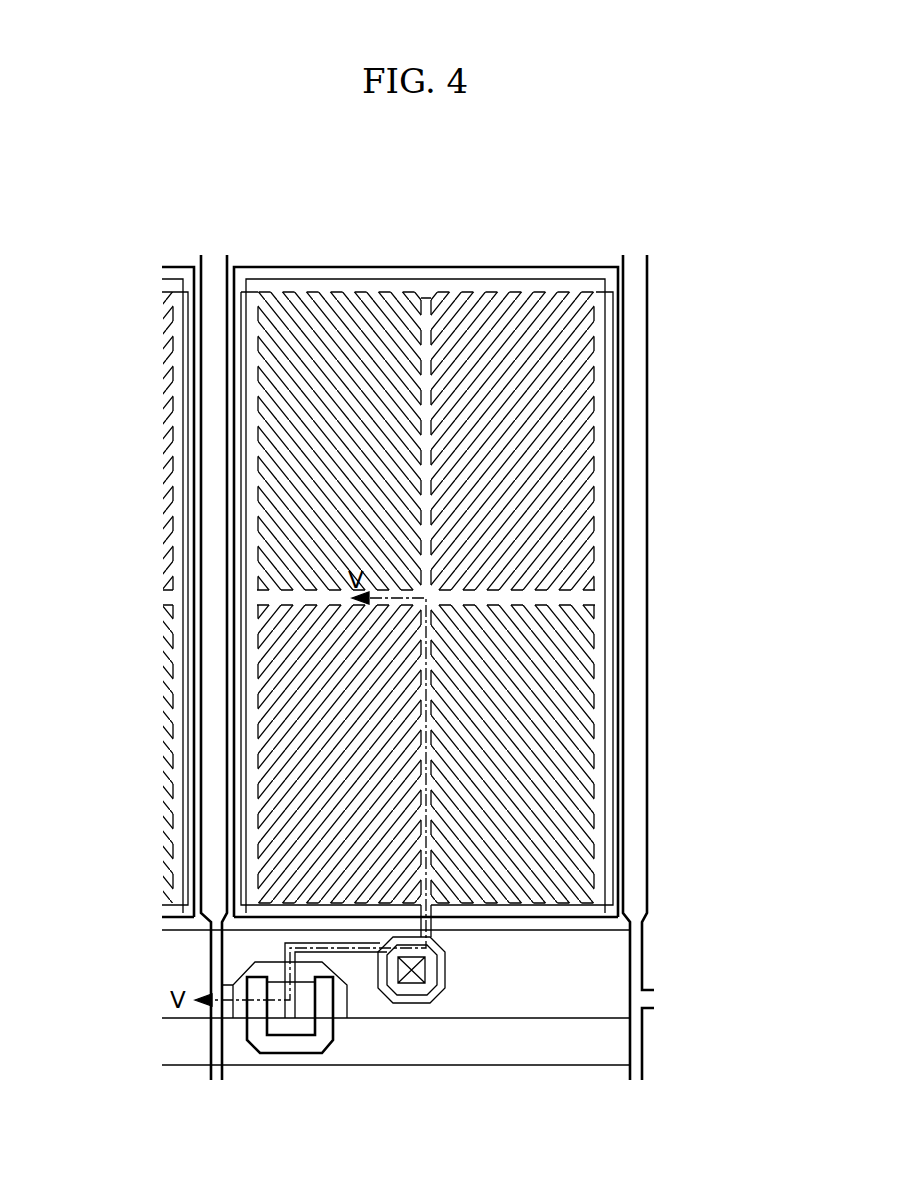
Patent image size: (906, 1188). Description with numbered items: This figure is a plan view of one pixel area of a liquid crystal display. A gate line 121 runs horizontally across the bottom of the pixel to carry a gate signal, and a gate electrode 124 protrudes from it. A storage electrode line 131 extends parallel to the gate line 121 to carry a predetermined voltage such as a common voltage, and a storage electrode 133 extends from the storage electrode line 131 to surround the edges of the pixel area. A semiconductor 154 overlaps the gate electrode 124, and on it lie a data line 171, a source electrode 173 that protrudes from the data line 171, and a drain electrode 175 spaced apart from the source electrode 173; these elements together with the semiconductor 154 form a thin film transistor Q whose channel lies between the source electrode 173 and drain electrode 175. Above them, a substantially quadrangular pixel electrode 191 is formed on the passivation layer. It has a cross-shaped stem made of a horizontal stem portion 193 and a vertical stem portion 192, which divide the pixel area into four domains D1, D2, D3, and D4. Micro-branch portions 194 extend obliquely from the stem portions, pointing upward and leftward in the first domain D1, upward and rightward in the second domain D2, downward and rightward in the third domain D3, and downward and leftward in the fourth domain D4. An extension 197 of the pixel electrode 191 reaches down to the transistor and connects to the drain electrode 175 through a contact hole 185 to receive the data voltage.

The gate line 121 is at (185, 1040).
The gate electrode 124 is at (233, 985).
The storage electrode line 131 is at (270, 917).
The storage electrode 133 is at (233, 690).
The semiconductor 154 is at (358, 962).
The data line 171 is at (213, 641).
The source electrode 173 is at (262, 1052).
The drain electrode 175 is at (283, 950).
The contact hole 185 is at (414, 985).
The pixel electrode 191 is at (86, 256).
The vertical stem portion 192 is at (424, 436).
The horizontal stem portion 193 is at (344, 588).
The micro-branch portions 194 is at (300, 740).
The extension 197 is at (505, 1097).
The thin film transistor Q is at (275, 1064).
The first domain D1 is at (358, 292).
The second domain D2 is at (546, 292).
The third domain D3 is at (556, 905).
The fourth domain D4 is at (362, 905).